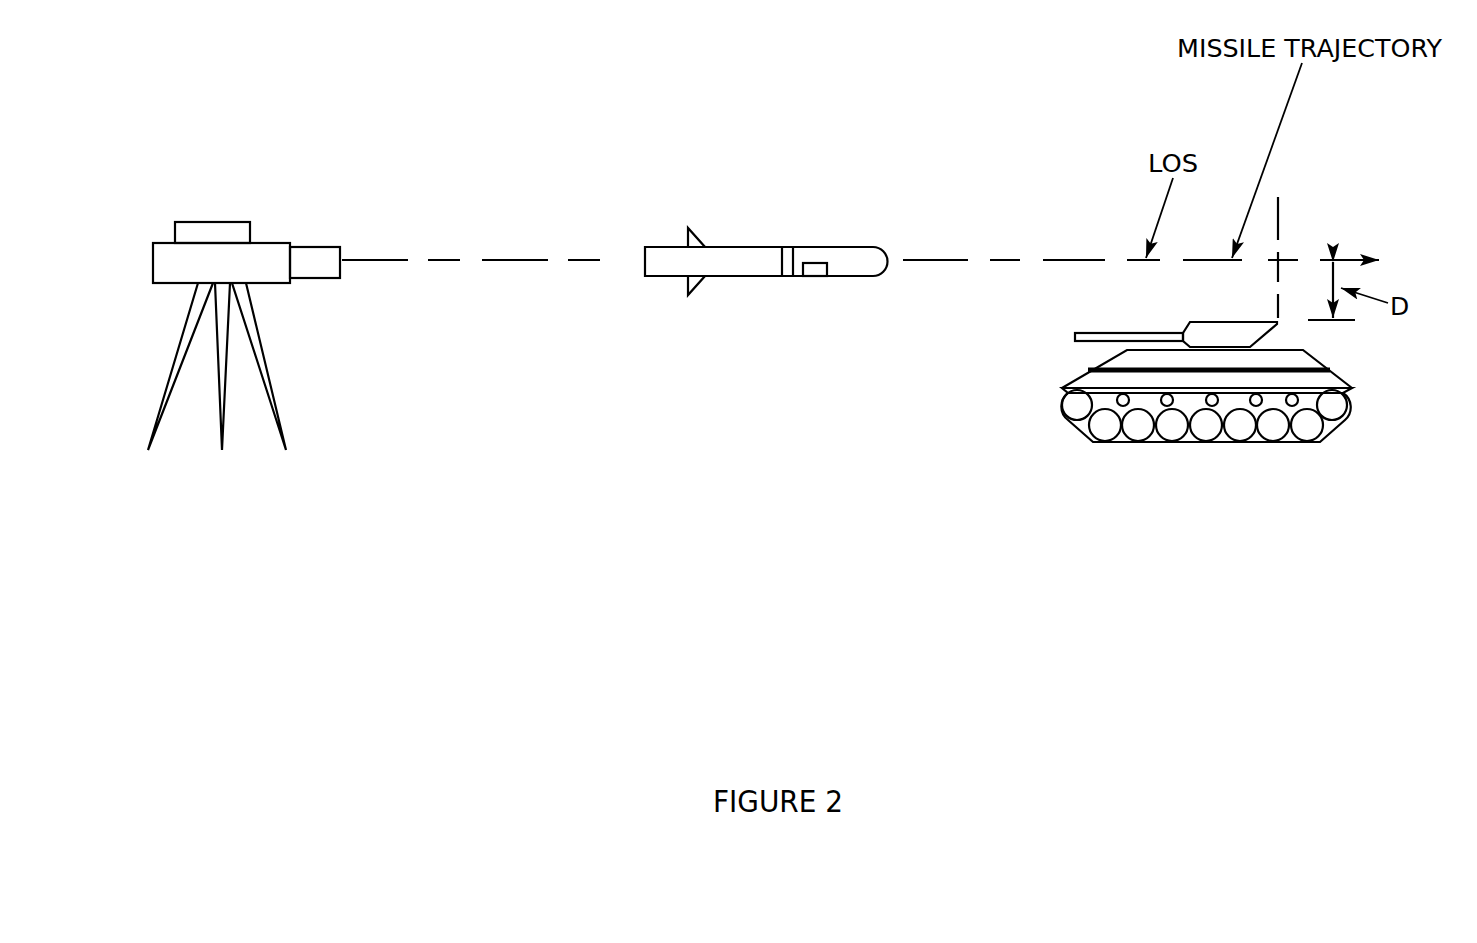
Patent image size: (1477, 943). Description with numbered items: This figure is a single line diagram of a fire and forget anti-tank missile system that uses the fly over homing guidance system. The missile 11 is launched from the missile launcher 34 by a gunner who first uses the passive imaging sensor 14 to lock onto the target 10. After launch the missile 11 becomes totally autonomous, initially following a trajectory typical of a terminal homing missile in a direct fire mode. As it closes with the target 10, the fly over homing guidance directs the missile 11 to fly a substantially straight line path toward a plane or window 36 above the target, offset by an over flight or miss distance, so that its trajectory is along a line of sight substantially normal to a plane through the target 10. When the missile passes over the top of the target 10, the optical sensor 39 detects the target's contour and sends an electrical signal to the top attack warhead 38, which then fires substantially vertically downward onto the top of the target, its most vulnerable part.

The missile launcher 34 is at (268, 241).
The missile 11 is at (850, 285).
The passive imaging sensor 14 is at (878, 246).
The top attack warhead 38 is at (782, 278).
The optical sensor 39 is at (821, 278).
The plane or window 36 is at (1283, 218).
The target 10 is at (1191, 445).